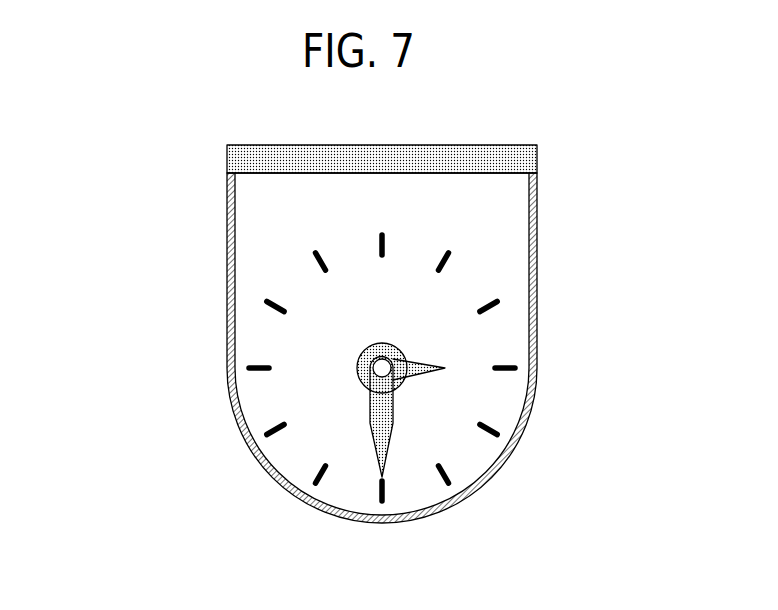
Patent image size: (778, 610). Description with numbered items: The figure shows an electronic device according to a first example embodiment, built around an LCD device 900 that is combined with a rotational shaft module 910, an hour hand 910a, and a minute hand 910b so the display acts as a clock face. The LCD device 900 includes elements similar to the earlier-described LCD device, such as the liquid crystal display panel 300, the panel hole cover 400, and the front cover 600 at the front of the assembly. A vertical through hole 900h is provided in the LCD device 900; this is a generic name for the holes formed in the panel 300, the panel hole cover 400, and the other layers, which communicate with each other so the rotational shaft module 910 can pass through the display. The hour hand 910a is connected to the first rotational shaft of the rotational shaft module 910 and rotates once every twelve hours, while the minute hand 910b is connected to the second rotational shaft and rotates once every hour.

The LCD device 900 is at (112, 162).
The front cover 600 is at (237, 158).
The liquid crystal display panel 300 is at (243, 248).
The panel hole cover 400 is at (367, 350).
The vertical through hole 900h is at (378, 368).
The rotational shaft module 910 is at (399, 408).
The hour hand 910a is at (416, 366).
The minute hand 910b is at (398, 420).